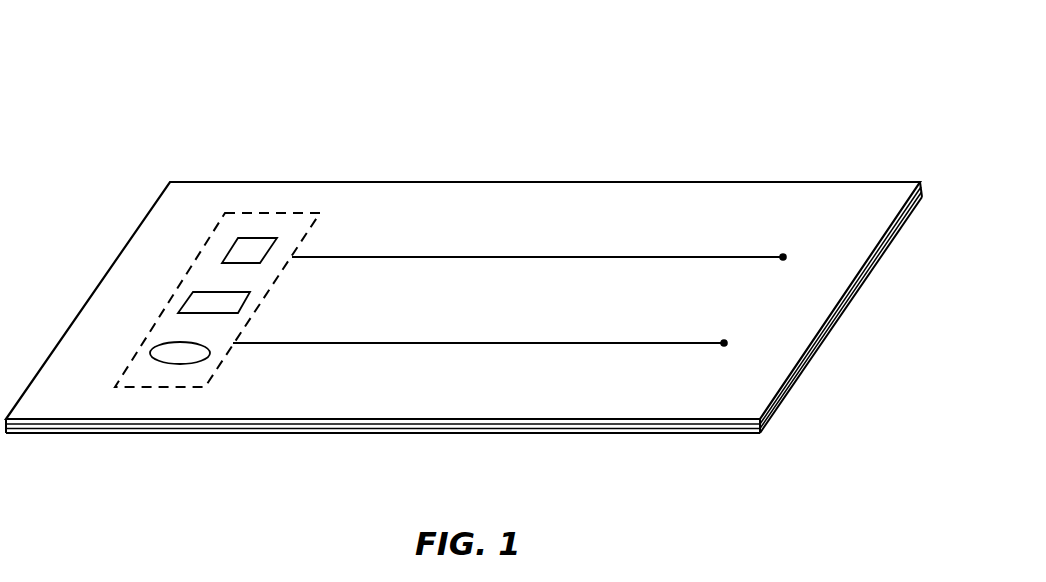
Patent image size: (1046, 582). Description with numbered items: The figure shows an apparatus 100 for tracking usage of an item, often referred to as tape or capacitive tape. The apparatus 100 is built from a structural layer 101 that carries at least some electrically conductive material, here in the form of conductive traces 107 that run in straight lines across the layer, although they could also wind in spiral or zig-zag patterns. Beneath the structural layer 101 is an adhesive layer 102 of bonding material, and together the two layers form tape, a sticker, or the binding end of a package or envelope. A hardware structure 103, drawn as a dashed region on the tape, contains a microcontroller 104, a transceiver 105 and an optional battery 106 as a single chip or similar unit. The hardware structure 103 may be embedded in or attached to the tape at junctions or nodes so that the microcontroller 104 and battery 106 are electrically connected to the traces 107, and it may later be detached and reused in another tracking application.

The apparatus 100 is at (225, 78).
The structural layer 101 is at (395, 423).
The adhesive layer 102 is at (347, 432).
The hardware structure 103 is at (282, 212).
The microcontroller 104 is at (230, 252).
The transceiver 105 is at (187, 303).
The battery 106 is at (170, 343).
The conductive traces 107 is at (495, 257).